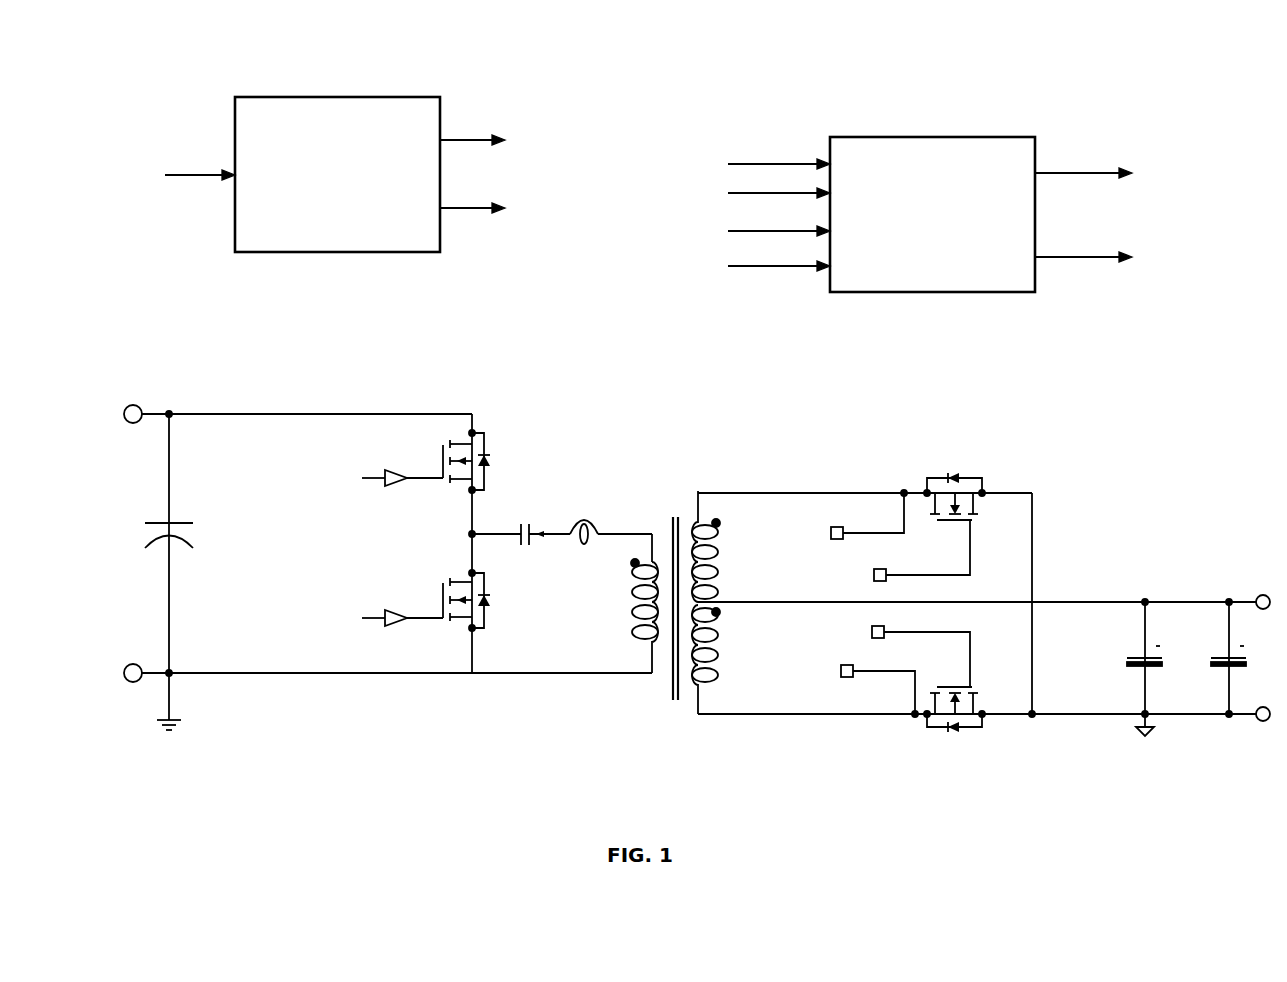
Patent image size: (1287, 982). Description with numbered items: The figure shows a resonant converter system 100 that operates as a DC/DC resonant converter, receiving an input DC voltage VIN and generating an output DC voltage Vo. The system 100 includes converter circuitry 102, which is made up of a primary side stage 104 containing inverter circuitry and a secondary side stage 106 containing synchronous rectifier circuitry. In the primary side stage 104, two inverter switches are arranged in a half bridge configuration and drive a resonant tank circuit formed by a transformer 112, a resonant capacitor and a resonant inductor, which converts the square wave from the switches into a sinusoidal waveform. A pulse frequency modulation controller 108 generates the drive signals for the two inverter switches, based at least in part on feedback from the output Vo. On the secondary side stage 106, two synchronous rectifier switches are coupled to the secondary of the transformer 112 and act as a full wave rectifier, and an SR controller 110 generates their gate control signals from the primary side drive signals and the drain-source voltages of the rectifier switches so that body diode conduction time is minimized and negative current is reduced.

The resonant converter system 100 is at (723, 68).
The converter circuitry 102 is at (211, 335).
The primary side stage 104 is at (395, 392).
The secondary side stage 106 is at (874, 434).
The pulse frequency modulation (PFM) controller 108 is at (333, 174).
The SR controller 110 is at (926, 214).
The transformer 112 is at (681, 491).